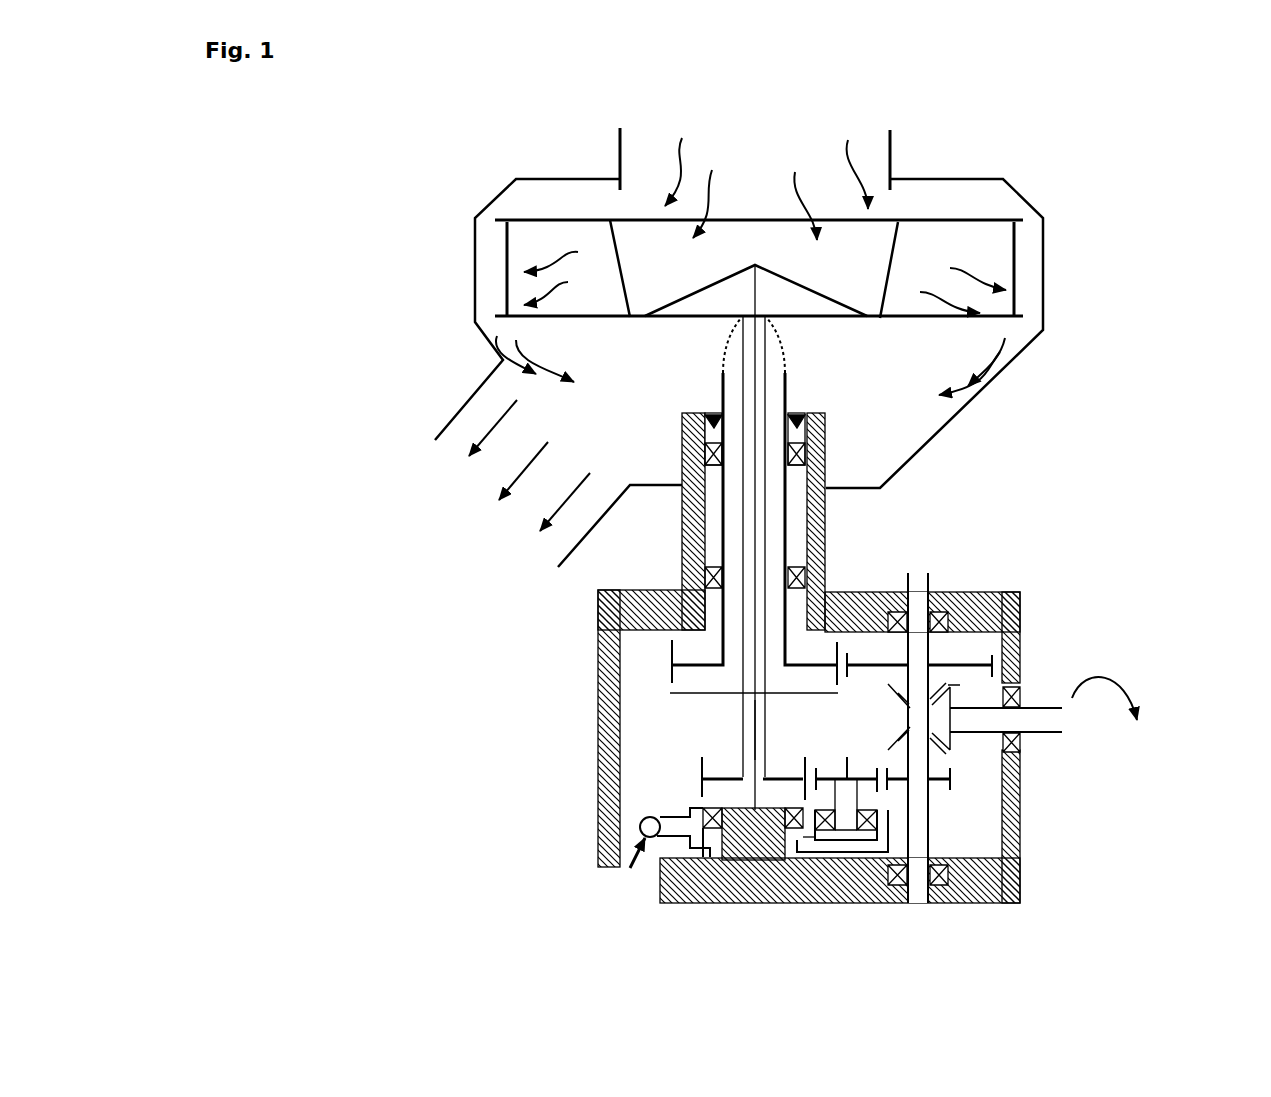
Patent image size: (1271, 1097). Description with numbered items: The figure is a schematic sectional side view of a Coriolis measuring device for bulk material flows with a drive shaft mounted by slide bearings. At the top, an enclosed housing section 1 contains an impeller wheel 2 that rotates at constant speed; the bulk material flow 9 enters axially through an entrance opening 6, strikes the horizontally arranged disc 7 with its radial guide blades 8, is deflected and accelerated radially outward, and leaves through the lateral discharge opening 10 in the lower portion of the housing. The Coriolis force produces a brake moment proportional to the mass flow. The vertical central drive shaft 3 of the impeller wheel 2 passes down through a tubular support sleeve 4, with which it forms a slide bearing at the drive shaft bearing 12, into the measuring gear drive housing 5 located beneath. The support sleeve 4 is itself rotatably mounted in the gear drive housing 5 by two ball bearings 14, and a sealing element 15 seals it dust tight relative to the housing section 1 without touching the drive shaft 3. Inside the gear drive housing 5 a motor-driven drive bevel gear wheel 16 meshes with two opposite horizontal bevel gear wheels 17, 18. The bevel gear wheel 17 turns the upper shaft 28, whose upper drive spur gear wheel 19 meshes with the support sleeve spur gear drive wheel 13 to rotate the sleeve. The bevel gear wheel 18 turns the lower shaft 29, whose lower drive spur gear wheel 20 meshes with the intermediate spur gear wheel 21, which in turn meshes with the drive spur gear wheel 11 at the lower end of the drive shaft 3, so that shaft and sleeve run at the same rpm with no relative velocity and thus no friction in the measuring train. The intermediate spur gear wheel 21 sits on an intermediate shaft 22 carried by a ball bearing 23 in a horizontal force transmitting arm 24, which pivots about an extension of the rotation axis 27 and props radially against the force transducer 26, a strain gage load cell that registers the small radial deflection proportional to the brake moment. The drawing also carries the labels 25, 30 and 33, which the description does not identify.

The housing section 1 is at (473, 262).
The impeller wheel 2 is at (532, 217).
The drive shaft 3 is at (767, 507).
The support sleeve 4 is at (788, 528).
The measuring gear drive housing 5 is at (616, 611).
The entrance opening 6 is at (775, 128).
The disc 7 is at (497, 326).
The radial guide blades 8 is at (982, 248).
The bulk material flow 9 is at (702, 180).
The lateral discharge opening 10 is at (505, 462).
The drive spur gear wheel 11 is at (700, 788).
The drive shaft bearing 12 is at (775, 558).
The support sleeve spur gear drive wheel 13 is at (671, 650).
The ball bearings 14 is at (825, 453).
The sealing element 15 is at (825, 415).
The drive bevel gear wheel 16 is at (960, 685).
The bevel gear wheel 17 is at (840, 696).
The bevel gear wheel 18 is at (957, 750).
The upper drive spur gear wheel 19 is at (932, 646).
The lower drive spur gear wheel 20 is at (951, 782).
The intermediate spur gear wheel 21 is at (878, 786).
The intermediate shaft 22 is at (1022, 900).
The ball bearing 23 is at (874, 806).
The force transmitting arm 24 is at (815, 855).
The hub 25 is at (710, 857).
The force transducer 26 is at (637, 829).
The rotation axis 27 is at (752, 736).
The upper shaft 28 is at (1000, 658).
The lower shaft 29 is at (881, 813).
The output shaft 30 is at (1036, 721).
The seal lip 33 is at (783, 362).